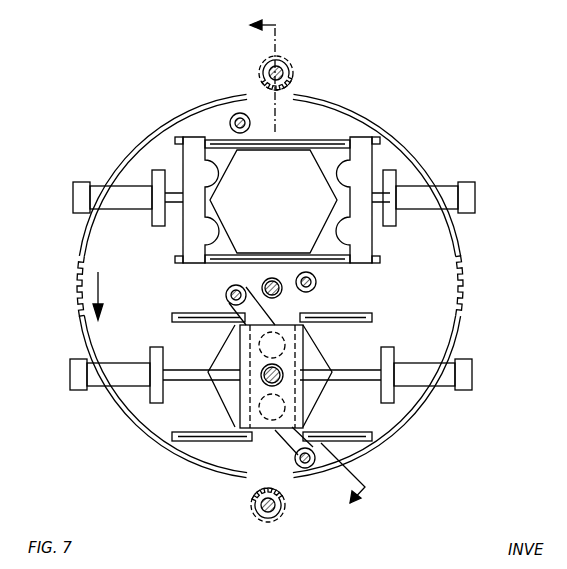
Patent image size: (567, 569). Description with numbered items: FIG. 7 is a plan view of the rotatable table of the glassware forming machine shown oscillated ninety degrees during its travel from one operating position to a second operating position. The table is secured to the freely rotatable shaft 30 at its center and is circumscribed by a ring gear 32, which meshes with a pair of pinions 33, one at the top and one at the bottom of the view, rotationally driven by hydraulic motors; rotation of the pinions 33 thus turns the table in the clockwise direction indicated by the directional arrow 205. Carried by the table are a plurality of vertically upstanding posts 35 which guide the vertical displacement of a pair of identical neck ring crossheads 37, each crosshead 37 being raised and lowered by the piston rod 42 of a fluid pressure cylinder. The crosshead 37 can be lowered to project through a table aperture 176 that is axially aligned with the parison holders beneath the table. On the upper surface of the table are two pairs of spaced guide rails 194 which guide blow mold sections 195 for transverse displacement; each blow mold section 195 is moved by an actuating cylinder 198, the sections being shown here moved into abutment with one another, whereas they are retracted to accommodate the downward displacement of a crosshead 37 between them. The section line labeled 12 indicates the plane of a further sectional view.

The section line 12 is at (291, 272).
The freely rotatable shaft 30 is at (266, 280).
The ring gear 32 is at (400, 142).
The pinion 33 is at (290, 66).
The vertically upstanding post 35 is at (230, 124).
The neck ring crosshead 37 is at (308, 412).
The piston rod 42 is at (285, 372).
The table aperture 176 is at (330, 236).
The guide rail 194 is at (303, 140).
The blow mold section 195 is at (205, 184).
The actuating cylinder 198 is at (102, 192).
The directional arrow 205 is at (100, 296).